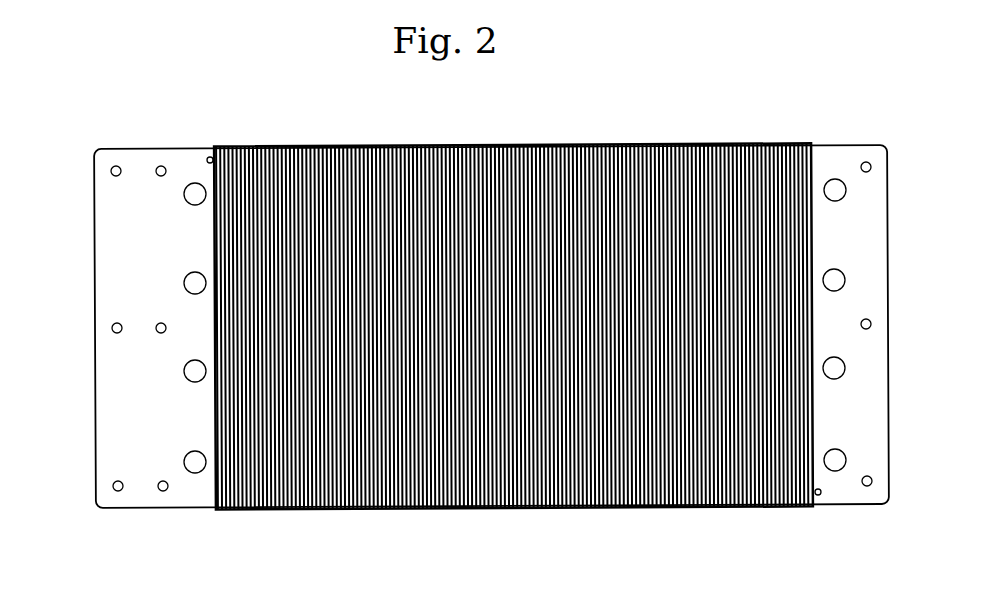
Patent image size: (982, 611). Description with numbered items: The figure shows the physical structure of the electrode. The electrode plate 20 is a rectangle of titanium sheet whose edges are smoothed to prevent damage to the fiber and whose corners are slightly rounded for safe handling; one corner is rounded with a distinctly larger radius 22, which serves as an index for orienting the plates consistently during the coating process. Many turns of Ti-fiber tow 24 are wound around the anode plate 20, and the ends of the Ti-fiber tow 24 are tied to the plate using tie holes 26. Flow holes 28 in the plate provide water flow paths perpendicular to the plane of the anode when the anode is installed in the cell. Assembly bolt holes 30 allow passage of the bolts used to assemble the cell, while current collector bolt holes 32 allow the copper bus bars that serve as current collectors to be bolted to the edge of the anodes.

The electrode plate 20 is at (488, 362).
The corner with distinctly larger radius 22 is at (93, 498).
The Ti-fiber tow 24 is at (388, 500).
The tie holes 26 is at (202, 149).
The flow holes 28 is at (183, 369).
The assembly bolt holes 30 is at (153, 158).
The current collector bolt holes 32 is at (108, 158).